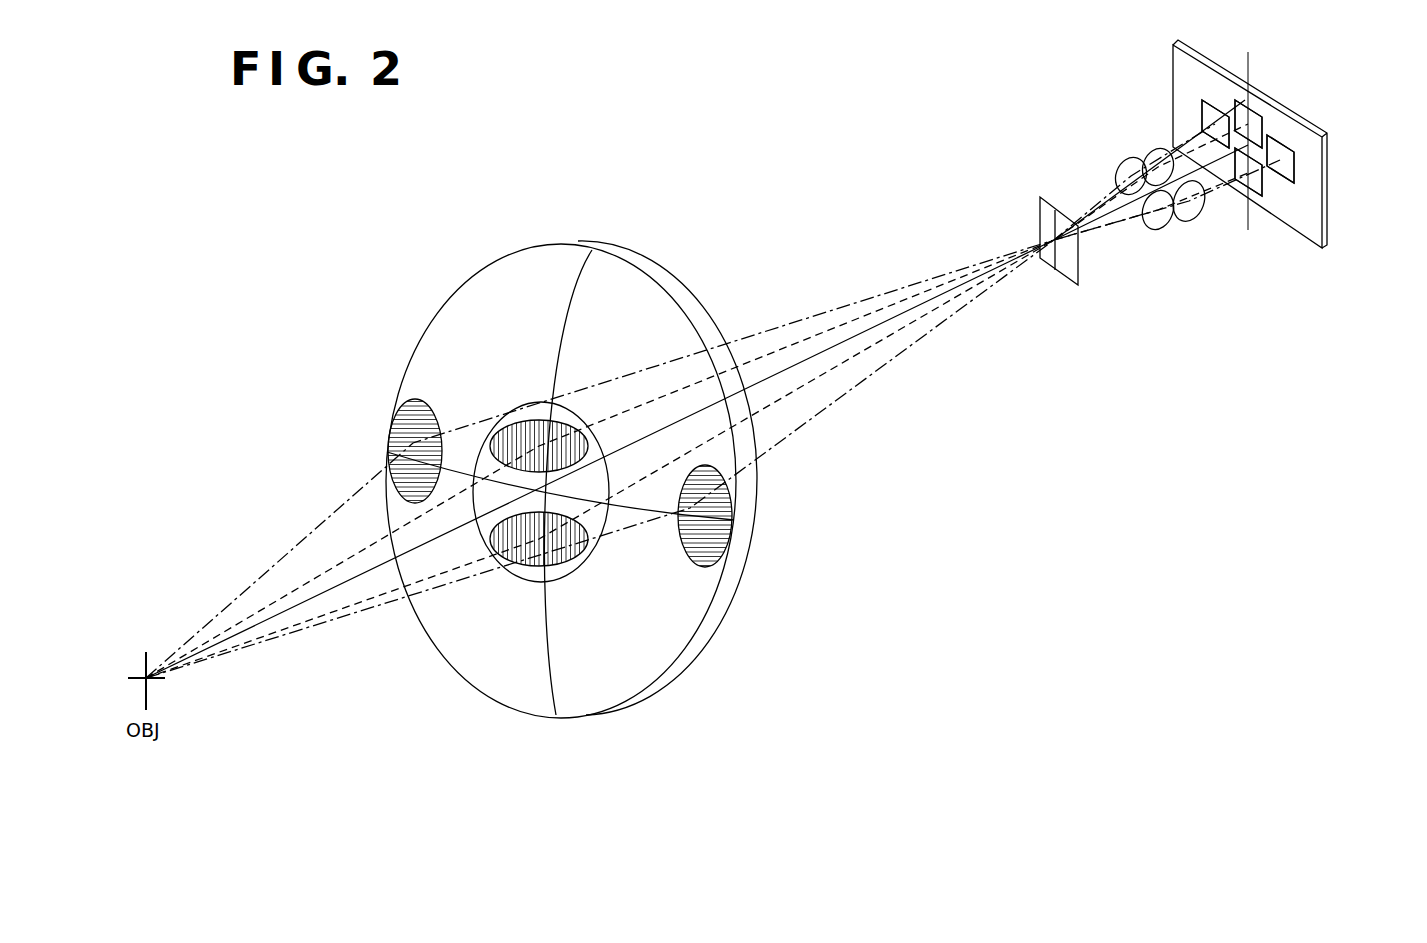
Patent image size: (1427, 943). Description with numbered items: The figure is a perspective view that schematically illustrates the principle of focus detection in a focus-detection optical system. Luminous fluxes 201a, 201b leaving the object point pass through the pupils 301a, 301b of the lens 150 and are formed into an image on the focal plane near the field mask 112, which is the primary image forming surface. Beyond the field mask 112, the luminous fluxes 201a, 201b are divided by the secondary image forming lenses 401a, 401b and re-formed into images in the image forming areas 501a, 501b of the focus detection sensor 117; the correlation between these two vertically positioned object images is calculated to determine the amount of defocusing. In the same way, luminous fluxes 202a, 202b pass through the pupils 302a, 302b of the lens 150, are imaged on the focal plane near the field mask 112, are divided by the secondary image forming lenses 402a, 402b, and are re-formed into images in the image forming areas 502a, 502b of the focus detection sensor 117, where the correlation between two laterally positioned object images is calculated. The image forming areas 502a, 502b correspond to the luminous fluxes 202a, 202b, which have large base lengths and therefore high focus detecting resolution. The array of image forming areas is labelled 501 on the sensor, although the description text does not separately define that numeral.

The lens 150 is at (618, 248).
The pupil 301a is at (586, 564).
The pupil 301b is at (516, 421).
The pupil 302a is at (701, 568).
The pupil 302b is at (396, 411).
The luminous flux 201a is at (258, 645).
The luminous flux 201b is at (218, 628).
The luminous flux 202a is at (348, 622).
The luminous flux 202b is at (264, 574).
The field mask 112 is at (1080, 278).
The secondary image forming lens 401a is at (1152, 150).
The secondary image forming lens 401b is at (1150, 230).
The secondary image forming lens 402a is at (1118, 176).
The secondary image forming lens 402b is at (1193, 223).
The focus detection sensor 117 is at (1330, 231).
The photoelectric conversion unit array 501 is at (1200, 60).
The image forming area 501a is at (1256, 113).
The image forming area 501b is at (1261, 197).
The image forming area 502a is at (1203, 102).
The image forming area 502b is at (1297, 164).